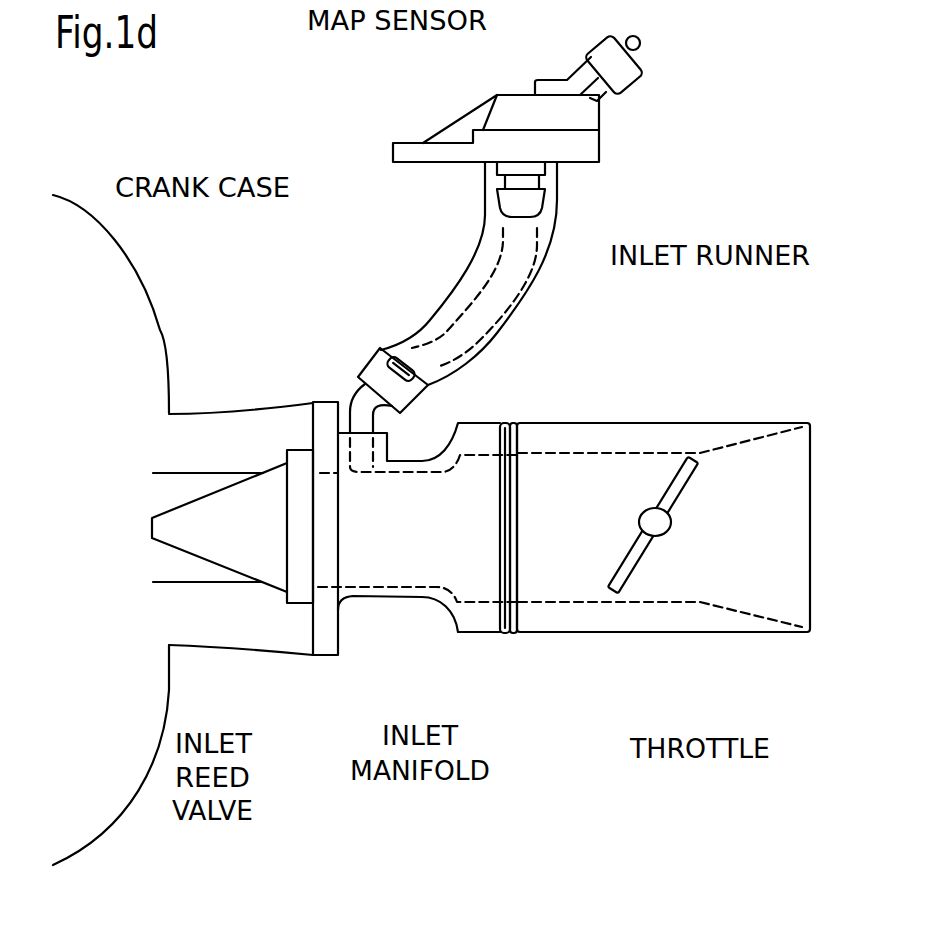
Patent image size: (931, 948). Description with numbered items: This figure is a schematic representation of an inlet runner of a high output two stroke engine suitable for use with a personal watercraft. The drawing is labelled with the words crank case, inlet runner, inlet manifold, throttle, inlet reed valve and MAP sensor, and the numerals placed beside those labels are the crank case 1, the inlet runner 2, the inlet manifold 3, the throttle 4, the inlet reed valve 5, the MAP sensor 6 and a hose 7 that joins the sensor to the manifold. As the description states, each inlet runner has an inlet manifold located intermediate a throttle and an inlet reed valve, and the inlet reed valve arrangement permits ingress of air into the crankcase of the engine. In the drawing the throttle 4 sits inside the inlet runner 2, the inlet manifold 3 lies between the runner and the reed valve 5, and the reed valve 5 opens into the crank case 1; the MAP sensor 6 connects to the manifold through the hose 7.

The crank case 1 is at (153, 300).
The inlet runner 2 is at (652, 405).
The inlet manifold 3 is at (390, 597).
The throttle 4 is at (633, 573).
The inlet reed valve 5 is at (237, 557).
The MAP sensor 6 is at (465, 117).
The hose 7 is at (432, 303).